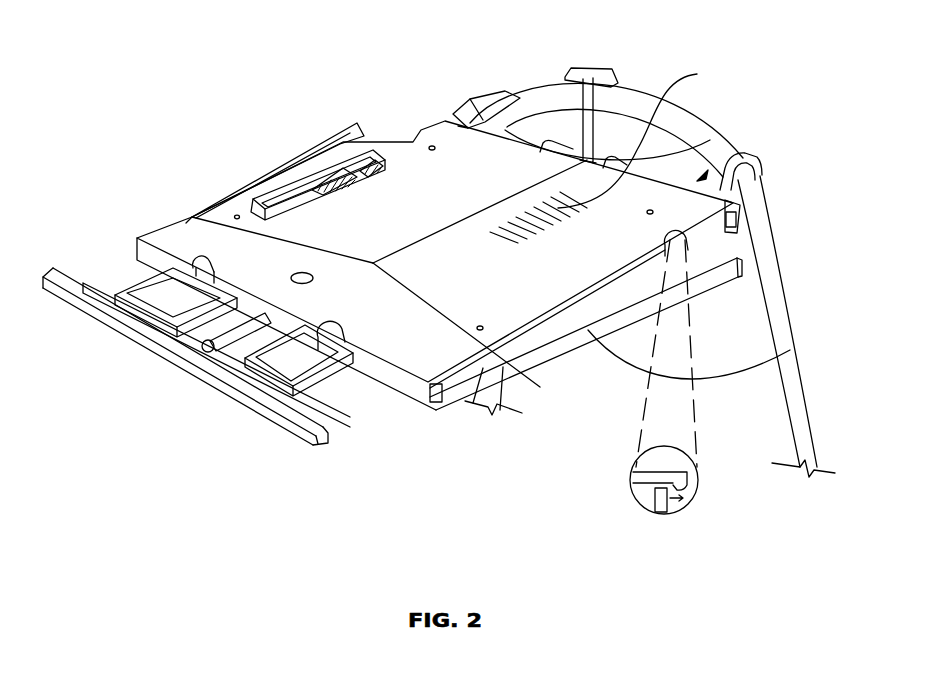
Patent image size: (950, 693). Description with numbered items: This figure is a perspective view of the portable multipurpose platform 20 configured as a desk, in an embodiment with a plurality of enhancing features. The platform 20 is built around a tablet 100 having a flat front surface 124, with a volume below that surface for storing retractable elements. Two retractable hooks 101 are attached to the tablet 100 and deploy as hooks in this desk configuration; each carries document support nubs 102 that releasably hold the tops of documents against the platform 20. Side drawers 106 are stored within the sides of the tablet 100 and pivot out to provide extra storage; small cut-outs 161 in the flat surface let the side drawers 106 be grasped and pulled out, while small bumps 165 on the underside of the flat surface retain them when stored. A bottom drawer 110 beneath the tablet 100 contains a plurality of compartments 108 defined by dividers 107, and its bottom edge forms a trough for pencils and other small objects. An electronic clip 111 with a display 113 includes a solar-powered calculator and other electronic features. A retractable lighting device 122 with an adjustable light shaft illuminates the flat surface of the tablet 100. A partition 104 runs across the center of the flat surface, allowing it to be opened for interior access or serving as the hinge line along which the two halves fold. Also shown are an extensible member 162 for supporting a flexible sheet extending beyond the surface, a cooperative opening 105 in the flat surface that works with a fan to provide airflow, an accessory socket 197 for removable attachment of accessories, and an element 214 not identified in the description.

The multipurpose platform 20 is at (160, 92).
The tablet 100 is at (145, 237).
The retractable hooks 101 is at (500, 112).
The document support nubs 102 is at (465, 118).
The partition 104 is at (505, 363).
The cooperative opening 105 is at (606, 136).
The side drawers 106 is at (343, 145).
The dividers 107 is at (233, 350).
The compartments 108 is at (167, 292).
The bottom drawer 110 is at (305, 447).
The electronic clip 111 is at (363, 170).
The display 113 is at (287, 188).
The lighting device 122 is at (598, 67).
The flat front surface 124 is at (402, 372).
The cut-outs 161 is at (788, 256).
The extensible member 162 is at (210, 326).
The bumps 165 is at (325, 336).
The accessory socket 197 is at (780, 205).
The hinge point 214 is at (192, 217).